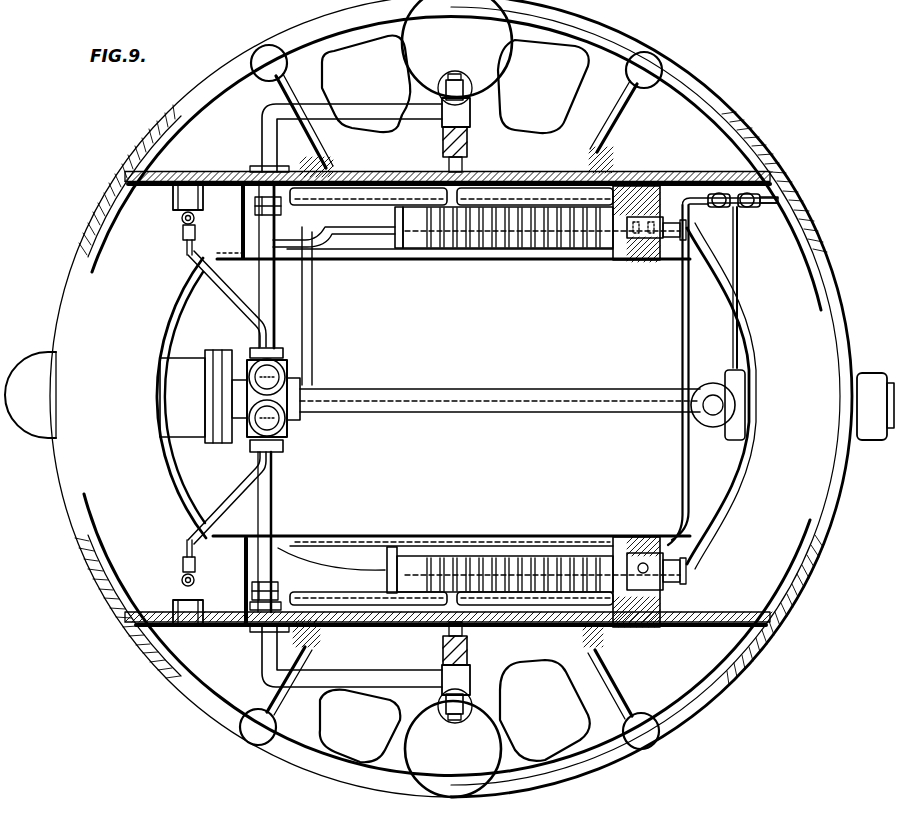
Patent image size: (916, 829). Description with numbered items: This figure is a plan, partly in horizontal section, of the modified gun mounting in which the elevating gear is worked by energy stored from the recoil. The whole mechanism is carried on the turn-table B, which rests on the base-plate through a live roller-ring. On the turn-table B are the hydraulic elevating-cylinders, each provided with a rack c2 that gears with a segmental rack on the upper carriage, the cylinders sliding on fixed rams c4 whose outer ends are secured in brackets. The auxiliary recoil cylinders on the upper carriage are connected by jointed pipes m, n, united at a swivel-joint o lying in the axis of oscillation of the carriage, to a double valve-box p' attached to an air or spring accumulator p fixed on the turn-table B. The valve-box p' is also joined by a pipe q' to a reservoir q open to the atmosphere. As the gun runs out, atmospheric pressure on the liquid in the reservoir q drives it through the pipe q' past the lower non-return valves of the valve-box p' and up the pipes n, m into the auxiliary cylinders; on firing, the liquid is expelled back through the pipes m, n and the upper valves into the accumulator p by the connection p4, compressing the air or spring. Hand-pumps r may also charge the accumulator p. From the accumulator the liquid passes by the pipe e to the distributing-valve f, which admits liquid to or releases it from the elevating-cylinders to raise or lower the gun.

The turn-table B is at (451, 398).
The pipe n is at (262, 143).
The pipe m is at (448, 143).
The swivel-joint o is at (455, 397).
The hand-pump r is at (182, 220).
The air or spring accumulator p is at (196, 396).
The double valve-box p' is at (273, 396).
The connection p4 is at (252, 440).
The pipe e is at (688, 371).
The distributing-valve f is at (745, 207).
The pipe q' is at (500, 400).
The reservoir q is at (875, 406).
The rack c2 is at (473, 234).
The ram c4 is at (650, 258).